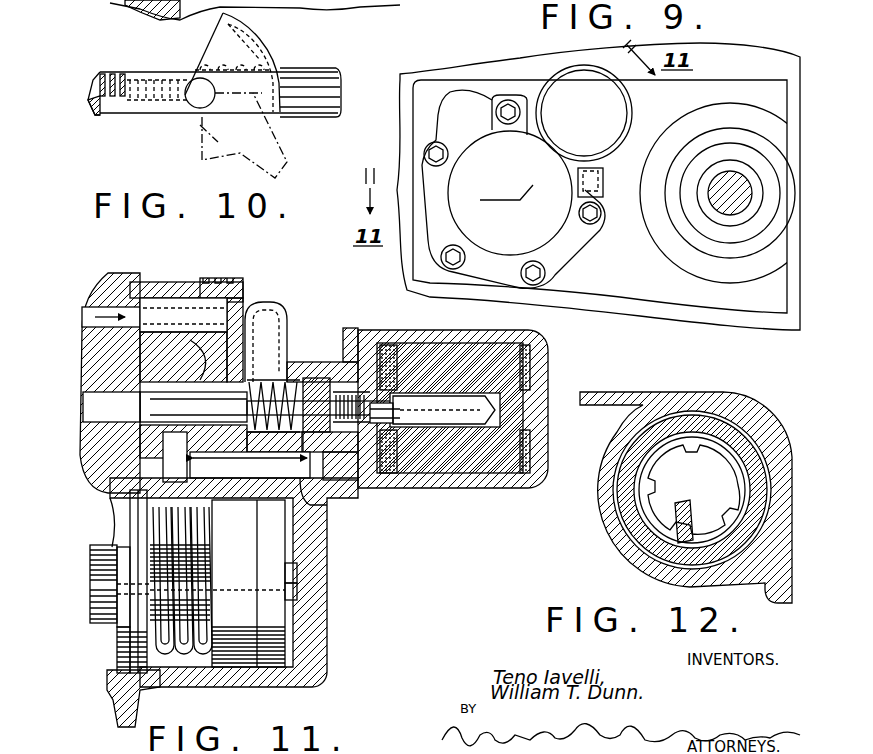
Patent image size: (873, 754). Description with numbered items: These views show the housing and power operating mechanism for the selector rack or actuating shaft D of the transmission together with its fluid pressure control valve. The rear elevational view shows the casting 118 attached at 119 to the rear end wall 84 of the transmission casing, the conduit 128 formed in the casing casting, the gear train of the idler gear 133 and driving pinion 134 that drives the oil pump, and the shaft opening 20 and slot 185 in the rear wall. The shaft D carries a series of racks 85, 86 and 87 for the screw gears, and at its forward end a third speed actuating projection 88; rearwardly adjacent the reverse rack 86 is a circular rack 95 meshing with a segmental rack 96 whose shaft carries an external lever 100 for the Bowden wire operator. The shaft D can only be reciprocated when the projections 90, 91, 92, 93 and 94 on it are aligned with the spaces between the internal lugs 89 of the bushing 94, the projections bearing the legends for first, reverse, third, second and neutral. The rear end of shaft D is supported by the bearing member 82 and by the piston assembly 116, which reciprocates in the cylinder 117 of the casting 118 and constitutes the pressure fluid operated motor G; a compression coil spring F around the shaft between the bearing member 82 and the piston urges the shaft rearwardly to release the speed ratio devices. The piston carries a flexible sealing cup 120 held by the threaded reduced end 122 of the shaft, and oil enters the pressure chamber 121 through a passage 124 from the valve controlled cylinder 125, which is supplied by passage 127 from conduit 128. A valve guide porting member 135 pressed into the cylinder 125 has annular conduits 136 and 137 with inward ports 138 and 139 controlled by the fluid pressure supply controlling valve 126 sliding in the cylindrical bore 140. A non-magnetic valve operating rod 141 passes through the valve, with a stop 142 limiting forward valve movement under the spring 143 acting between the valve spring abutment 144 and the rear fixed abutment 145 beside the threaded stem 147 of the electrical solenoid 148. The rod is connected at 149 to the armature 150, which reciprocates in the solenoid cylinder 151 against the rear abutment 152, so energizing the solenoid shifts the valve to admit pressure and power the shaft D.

In FIG. 9, the shaft 20 is at (735, 172).
In FIG. 11, the bearing member 82 is at (118, 648).
In FIG. 9, the rear end wall 84 is at (570, 288).
In FIG. 10, the rack 85 is at (152, 88).
In FIG. 10, the reverse rack 86 is at (232, 62).
In FIG. 10, the rack 87 is at (97, 72).
In FIG. 12, the third speed actuating projection 88 is at (668, 522).
In FIG. 12, the internal lugs 89 is at (708, 438).
In FIG. 12, the projection 90 is at (640, 485).
In FIG. 12, the projection 91 is at (668, 447).
In FIG. 12, the projection 92 is at (682, 548).
In FIG. 12, the projection 93 is at (738, 458).
In FIG. 12, the bushing 94 is at (745, 512).
In FIG. 10, the circular rack 95 is at (314, 70).
In FIG. 11, the circular rack 95 is at (97, 614).
In FIG. 10, the segmental rack 96 is at (268, 46).
In FIG. 10, the lever 100 is at (264, 143).
In FIG. 9, the piston assembly 116 is at (450, 230).
In FIG. 11, the piston assembly 116 is at (247, 624).
In FIG. 11, the cylinder 117 is at (193, 686).
In FIG. 9, the casting 118 is at (535, 232).
In FIG. 11, the casting 118 is at (298, 370).
In FIG. 9, the attachment 119 is at (496, 112).
In FIG. 11, the attachment 119 is at (430, 311).
In FIG. 11, the flexible sealing cup 120 is at (277, 553).
In FIG. 11, the pressure chamber 121 is at (293, 607).
In FIG. 11, the threaded reduced end 122 is at (298, 582).
In FIG. 11, the passage 124 is at (332, 493).
In FIG. 11, the valve controlled cylinder 125 is at (243, 448).
In FIG. 11, the fluid pressure supply controlling valve 126 is at (138, 447).
In FIG. 11, the passage 127 is at (243, 288).
In FIG. 11, the conduit 128 is at (108, 281).
In FIG. 11, the idler gear 133 is at (293, 309).
In FIG. 11, the driving pinion 134 is at (140, 433).
In FIG. 11, the valve guide porting member 135 is at (207, 360).
In FIG. 11, the annular conduit 136 is at (183, 357).
In FIG. 11, the annular conduit 137 is at (113, 344).
In FIG. 11, the port 138 is at (140, 390).
In FIG. 11, the port 139 is at (182, 506).
In FIG. 11, the cylindrical bore 140 is at (190, 454).
In FIG. 11, the valve operating rod 141 is at (284, 366).
In FIG. 11, the stop 142 is at (140, 417).
In FIG. 11, the spring 143 is at (266, 450).
In FIG. 11, the valve spring abutment 144 is at (278, 462).
In FIG. 11, the rear fixed abutment 145 is at (312, 357).
In FIG. 11, the threaded stem 147 is at (404, 440).
In FIG. 9, the electrical solenoid 148 is at (622, 114).
In FIG. 11, the electrical solenoid 148 is at (370, 375).
In FIG. 11, the connection 149 is at (437, 403).
In FIG. 11, the armature 150 is at (472, 391).
In FIG. 11, the solenoid cylinder 151 is at (497, 391).
In FIG. 11, the rear abutment 152 is at (549, 381).
In FIG. 9, the slot 185 is at (604, 181).
In FIG. 11, the actuating shaft D is at (95, 557).
In FIG. 11, the prime mover means F is at (195, 538).
In FIG. 11, the pressure fluid operated motor G is at (293, 523).